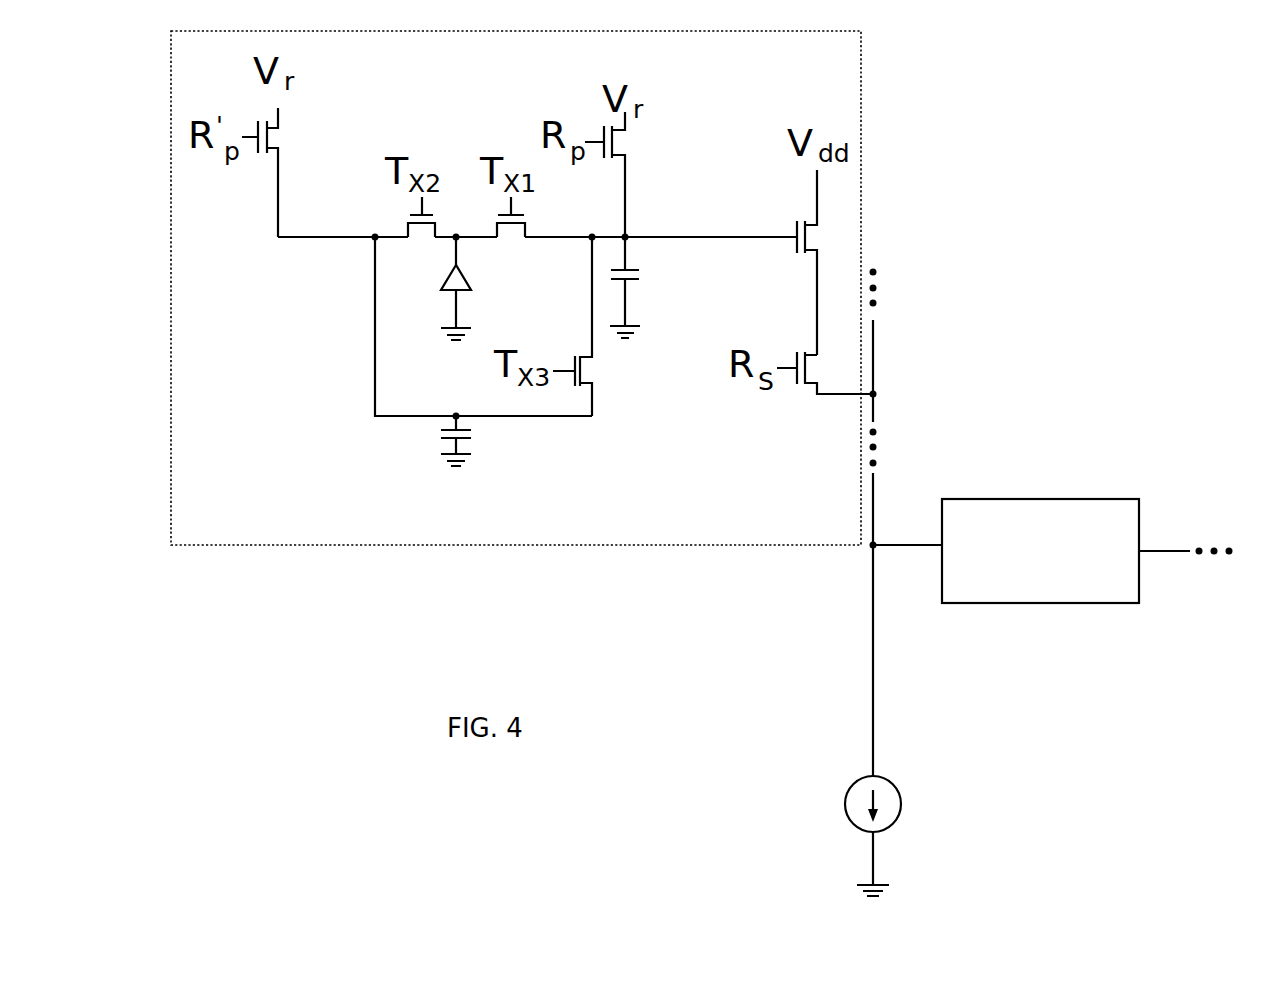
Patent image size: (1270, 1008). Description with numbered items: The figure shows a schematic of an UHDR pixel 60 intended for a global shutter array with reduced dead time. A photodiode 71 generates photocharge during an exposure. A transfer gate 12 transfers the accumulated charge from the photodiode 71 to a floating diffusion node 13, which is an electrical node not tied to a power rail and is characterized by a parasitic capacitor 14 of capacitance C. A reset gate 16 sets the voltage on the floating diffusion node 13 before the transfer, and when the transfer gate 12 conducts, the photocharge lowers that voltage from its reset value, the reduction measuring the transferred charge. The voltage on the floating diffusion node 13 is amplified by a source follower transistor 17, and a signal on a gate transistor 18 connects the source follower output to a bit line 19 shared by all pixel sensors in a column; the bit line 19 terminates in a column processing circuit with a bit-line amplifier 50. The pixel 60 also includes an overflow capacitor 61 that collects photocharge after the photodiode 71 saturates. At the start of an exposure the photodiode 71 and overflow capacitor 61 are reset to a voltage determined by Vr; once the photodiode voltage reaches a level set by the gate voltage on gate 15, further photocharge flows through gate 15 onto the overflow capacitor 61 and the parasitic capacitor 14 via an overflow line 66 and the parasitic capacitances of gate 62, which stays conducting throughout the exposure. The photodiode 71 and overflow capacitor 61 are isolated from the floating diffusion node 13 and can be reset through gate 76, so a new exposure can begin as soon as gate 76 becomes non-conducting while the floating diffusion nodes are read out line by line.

The pixel 60 is at (861, 73).
The gate 76 is at (268, 136).
The gate 15 is at (437, 225).
The transfer gate 12 is at (527, 225).
The photodiode 71 is at (471, 286).
The floating diffusion node 13 is at (628, 236).
The parasitic capacitor 14 is at (639, 280).
The reset gate 16 is at (614, 141).
The source follower transistor 17 is at (808, 260).
The gate transistor 18 is at (808, 368).
The overflow line 66 is at (424, 415).
The gate 62 is at (597, 357).
The overflow capacitor 61 is at (470, 438).
The bit line 19 is at (870, 697).
The bit-line amplifier 50 is at (1140, 508).